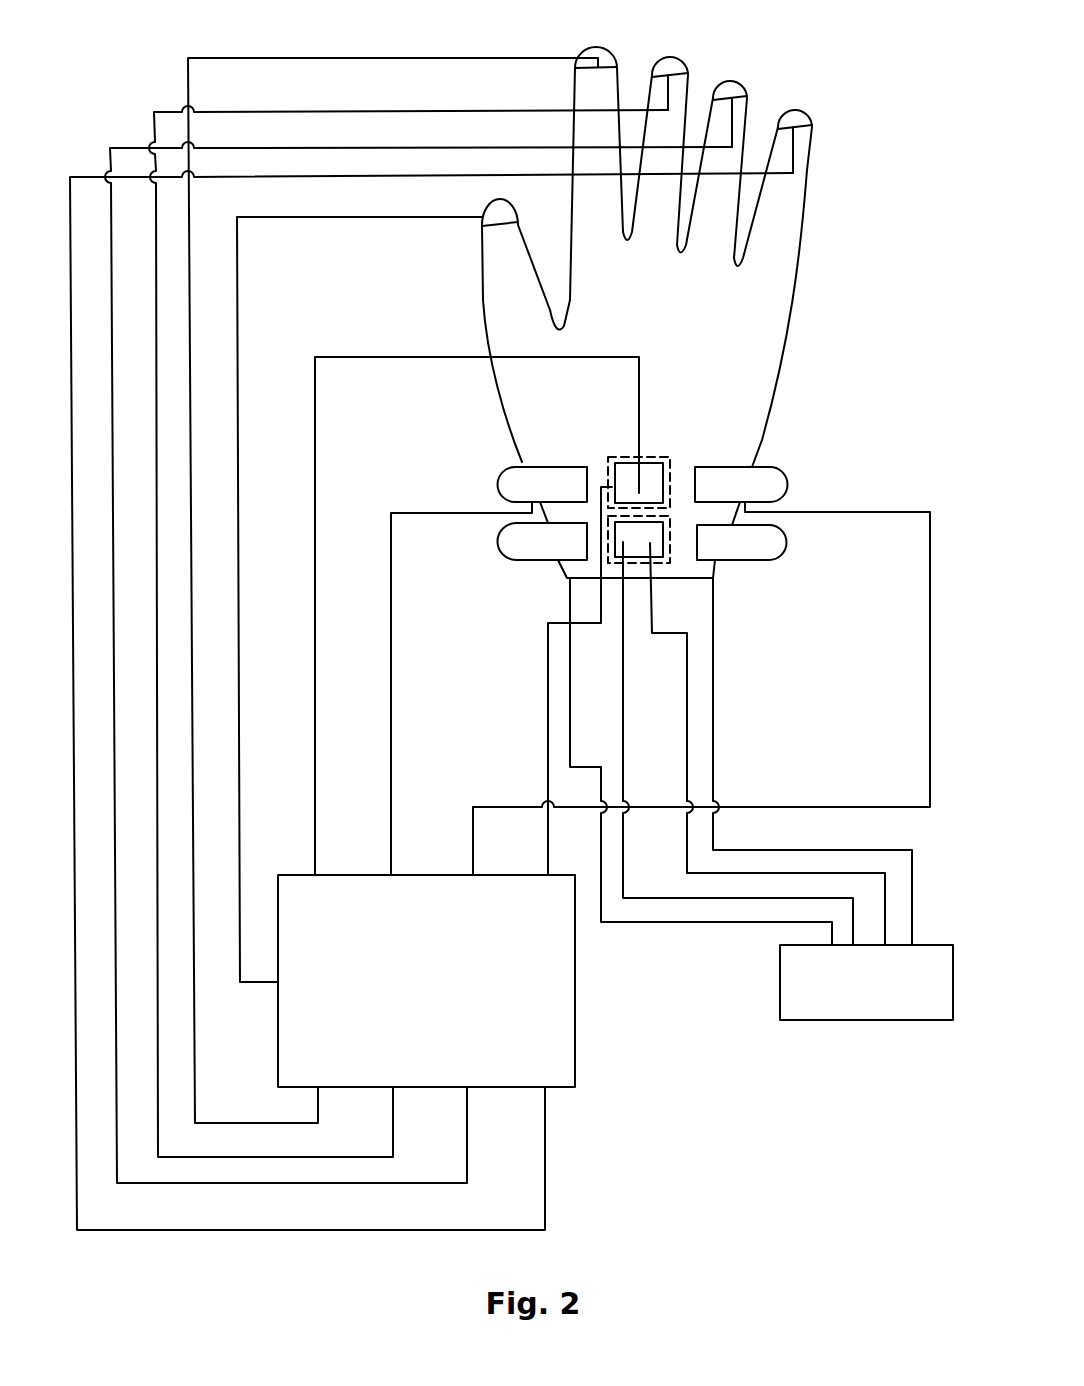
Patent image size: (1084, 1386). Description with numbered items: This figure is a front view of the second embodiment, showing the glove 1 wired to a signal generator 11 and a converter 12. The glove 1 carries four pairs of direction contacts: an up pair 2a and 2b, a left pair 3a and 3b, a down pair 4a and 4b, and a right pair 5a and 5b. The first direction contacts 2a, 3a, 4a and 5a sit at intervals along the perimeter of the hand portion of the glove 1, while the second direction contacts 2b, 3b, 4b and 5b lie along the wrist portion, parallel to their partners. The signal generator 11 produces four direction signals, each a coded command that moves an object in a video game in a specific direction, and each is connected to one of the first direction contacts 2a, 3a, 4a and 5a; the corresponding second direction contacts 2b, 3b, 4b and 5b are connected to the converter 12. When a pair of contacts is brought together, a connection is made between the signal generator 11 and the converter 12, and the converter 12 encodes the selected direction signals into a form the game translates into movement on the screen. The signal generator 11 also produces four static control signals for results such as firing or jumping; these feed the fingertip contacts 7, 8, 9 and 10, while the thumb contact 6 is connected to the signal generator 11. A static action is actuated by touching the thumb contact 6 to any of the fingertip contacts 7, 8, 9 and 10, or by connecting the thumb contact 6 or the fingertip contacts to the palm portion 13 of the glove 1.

The glove 1 is at (694, 312).
The first direction contact of the up pair 2a is at (505, 483).
The second direction contact of the up pair 2b is at (501, 541).
The first direction contact of the left pair 3a is at (522, 438).
The second direction contact of the left pair 3b is at (683, 584).
The first direction contact of the down pair 4a is at (781, 483).
The second direction contact of the down pair 4b is at (782, 542).
The first direction contact of the right pair 5a is at (736, 464).
The second direction contact of the right pair 5b is at (722, 562).
The thumb contact 6 is at (513, 205).
The fingertip contact 7 is at (594, 34).
The fingertip contact 8 is at (666, 62).
The fingertip contact 9 is at (730, 93).
The fingertip contact 10 is at (793, 117).
The signal generator 11 is at (471, 1011).
The converter 12 is at (864, 1046).
The palm portion 13 is at (777, 266).